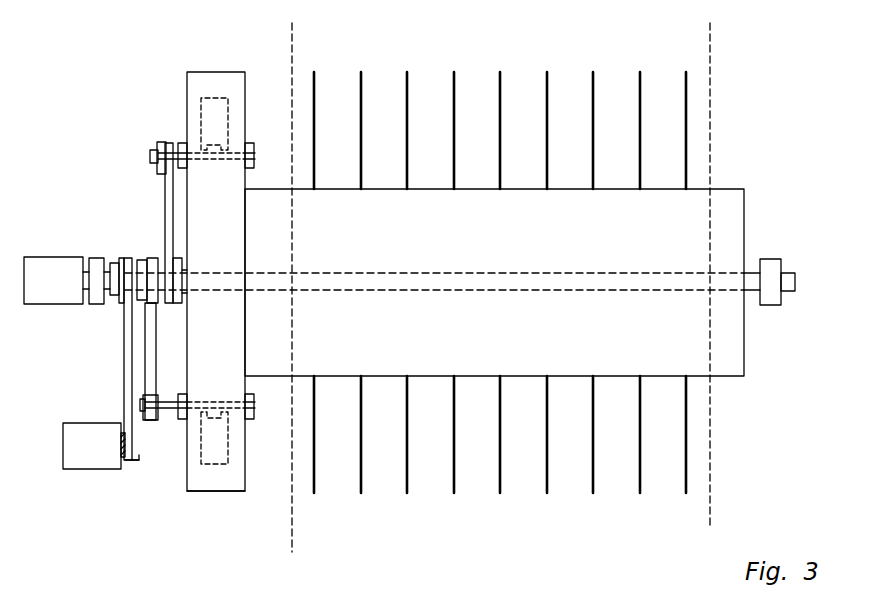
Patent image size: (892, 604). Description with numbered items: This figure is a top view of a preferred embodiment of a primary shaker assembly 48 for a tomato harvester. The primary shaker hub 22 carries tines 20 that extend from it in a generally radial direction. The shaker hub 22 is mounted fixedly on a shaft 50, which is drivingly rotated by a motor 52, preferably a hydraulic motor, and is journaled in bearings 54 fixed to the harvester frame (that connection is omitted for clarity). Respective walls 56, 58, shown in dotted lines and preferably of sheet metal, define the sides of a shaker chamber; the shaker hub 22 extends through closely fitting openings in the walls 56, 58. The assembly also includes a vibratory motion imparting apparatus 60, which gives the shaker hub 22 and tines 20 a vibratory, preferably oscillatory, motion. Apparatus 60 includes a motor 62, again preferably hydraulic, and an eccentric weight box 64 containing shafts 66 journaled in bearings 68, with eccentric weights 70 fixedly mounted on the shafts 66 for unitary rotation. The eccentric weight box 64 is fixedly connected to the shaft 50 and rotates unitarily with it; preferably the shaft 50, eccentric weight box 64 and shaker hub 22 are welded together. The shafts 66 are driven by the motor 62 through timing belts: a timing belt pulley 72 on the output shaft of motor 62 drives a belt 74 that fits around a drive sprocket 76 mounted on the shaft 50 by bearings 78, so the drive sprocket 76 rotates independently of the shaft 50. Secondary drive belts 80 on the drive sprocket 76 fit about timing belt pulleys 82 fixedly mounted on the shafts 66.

The tines 20 is at (454, 97).
The primary shaker hub 22 is at (756, 333).
The primary shaker assembly 48 is at (226, 53).
The shaft 50 is at (755, 272).
The motor 52 is at (35, 262).
The bearings 54 is at (96, 258).
The wall 56 is at (710, 128).
The wall 58 is at (292, 525).
The vibratory motion imparting apparatus 60 is at (122, 488).
The motor 62 is at (75, 432).
The eccentric weight box 64 is at (214, 495).
The shafts 66 is at (150, 156).
The bearings 68 is at (181, 143).
The eccentric weights 70 is at (217, 463).
The timing belt pulley 72 is at (140, 462).
The belt 74 is at (132, 343).
The drive sprocket 76 is at (142, 260).
The bearings 78 is at (115, 262).
The secondary drive belts 80 is at (164, 183).
The timing belt pulleys 82 is at (160, 143).